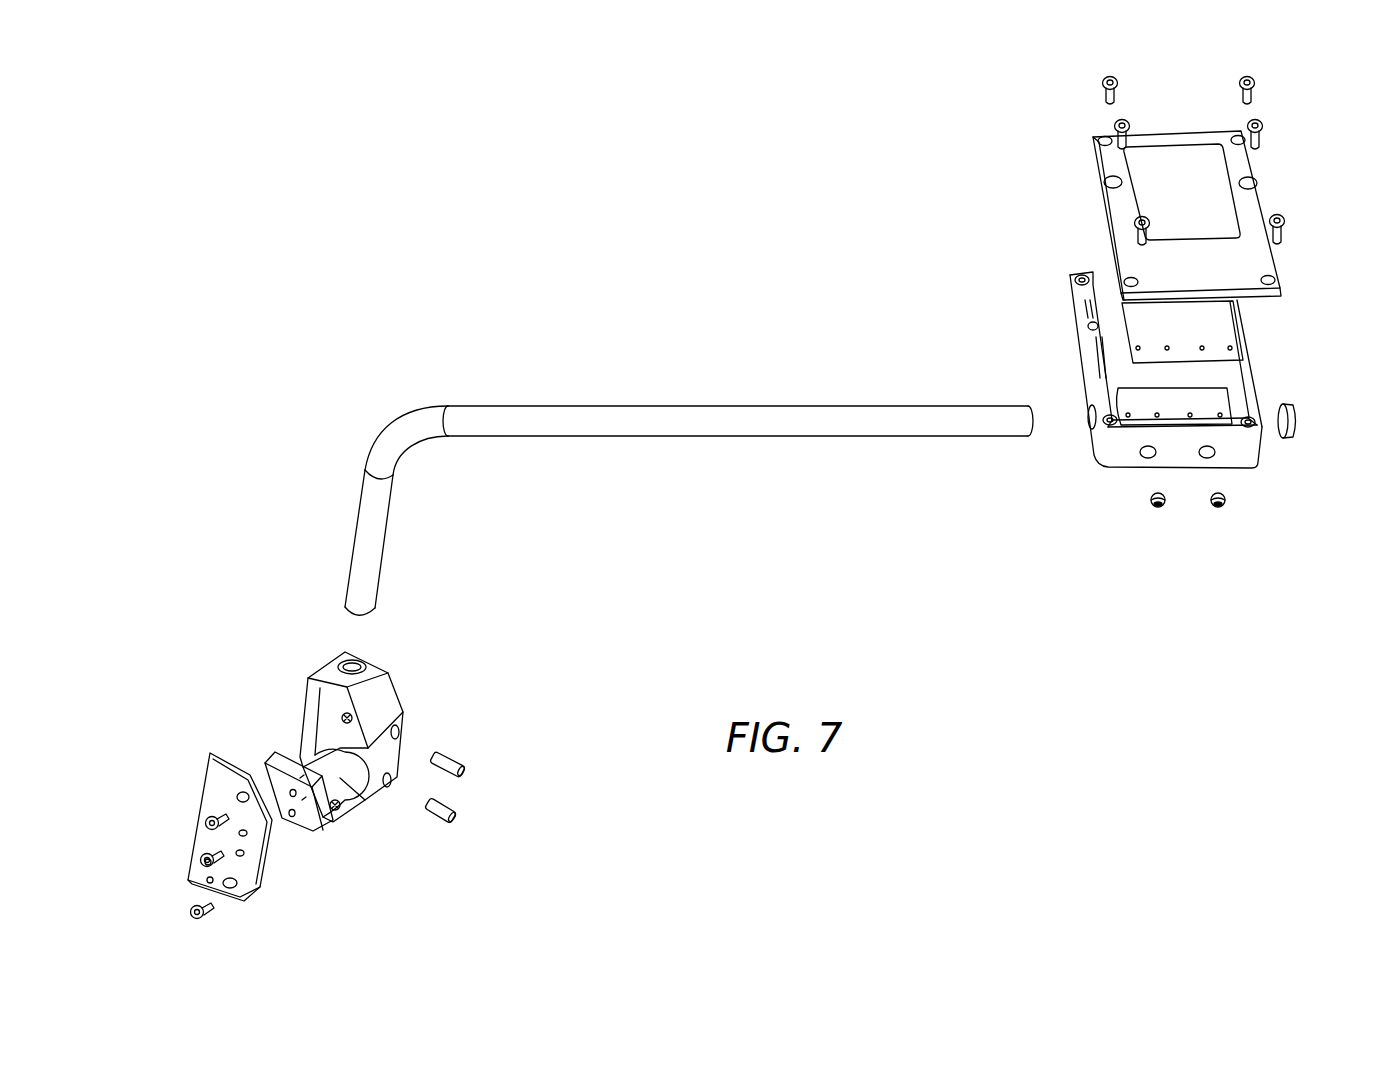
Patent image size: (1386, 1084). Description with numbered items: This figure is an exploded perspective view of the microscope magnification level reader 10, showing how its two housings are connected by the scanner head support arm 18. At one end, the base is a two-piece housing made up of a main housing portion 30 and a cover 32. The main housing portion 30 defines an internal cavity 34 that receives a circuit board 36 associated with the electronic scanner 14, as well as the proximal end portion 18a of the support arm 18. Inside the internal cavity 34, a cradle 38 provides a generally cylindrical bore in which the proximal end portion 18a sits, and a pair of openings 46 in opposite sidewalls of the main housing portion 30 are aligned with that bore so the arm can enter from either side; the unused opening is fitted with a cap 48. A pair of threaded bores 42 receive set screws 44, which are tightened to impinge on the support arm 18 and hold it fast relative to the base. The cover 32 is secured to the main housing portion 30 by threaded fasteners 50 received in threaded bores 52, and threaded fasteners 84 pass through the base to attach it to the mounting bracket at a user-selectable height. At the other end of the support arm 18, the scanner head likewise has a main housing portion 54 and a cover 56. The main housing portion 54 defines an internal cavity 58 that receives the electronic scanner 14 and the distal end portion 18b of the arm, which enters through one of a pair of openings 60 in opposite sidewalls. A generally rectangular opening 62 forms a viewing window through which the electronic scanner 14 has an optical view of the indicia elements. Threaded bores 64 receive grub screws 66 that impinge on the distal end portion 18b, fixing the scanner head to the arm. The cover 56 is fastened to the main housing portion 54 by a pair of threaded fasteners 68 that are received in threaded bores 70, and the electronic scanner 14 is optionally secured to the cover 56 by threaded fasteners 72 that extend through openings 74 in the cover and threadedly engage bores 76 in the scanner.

The microscope magnification level reader 10 is at (618, 246).
The electronic scanner 14 is at (303, 826).
The scanner head support arm 18 is at (630, 401).
The proximal end portion of support arm 18a is at (975, 388).
The distal end portion of support arm 18b is at (400, 536).
The main housing portion 30 is at (1068, 315).
The cover 32 is at (1100, 206).
The internal cavity 34 is at (1224, 378).
The circuit board 36 is at (1220, 327).
The cradle 38 is at (1140, 405).
The threaded bores 42 is at (1146, 462).
The set screws 44 is at (1160, 510).
The openings 46 is at (1086, 434).
The cap 48 is at (1299, 427).
The threaded fasteners 50 is at (1117, 121).
The threaded bores 52 is at (1074, 276).
The main housing portion 54 is at (385, 694).
The cover 56 is at (210, 758).
The internal cavity 58 is at (323, 737).
The openings 60 is at (356, 662).
The rectangular opening 62 is at (383, 762).
The threaded bores 64 is at (406, 732).
The grub screws 66 is at (463, 752).
The threaded fasteners 68 is at (202, 818).
The threaded bores 70 is at (345, 725).
The threaded fasteners 72 is at (203, 876).
The openings 74 is at (246, 855).
The bores 76 is at (268, 782).
The threaded fasteners 84 is at (1148, 218).